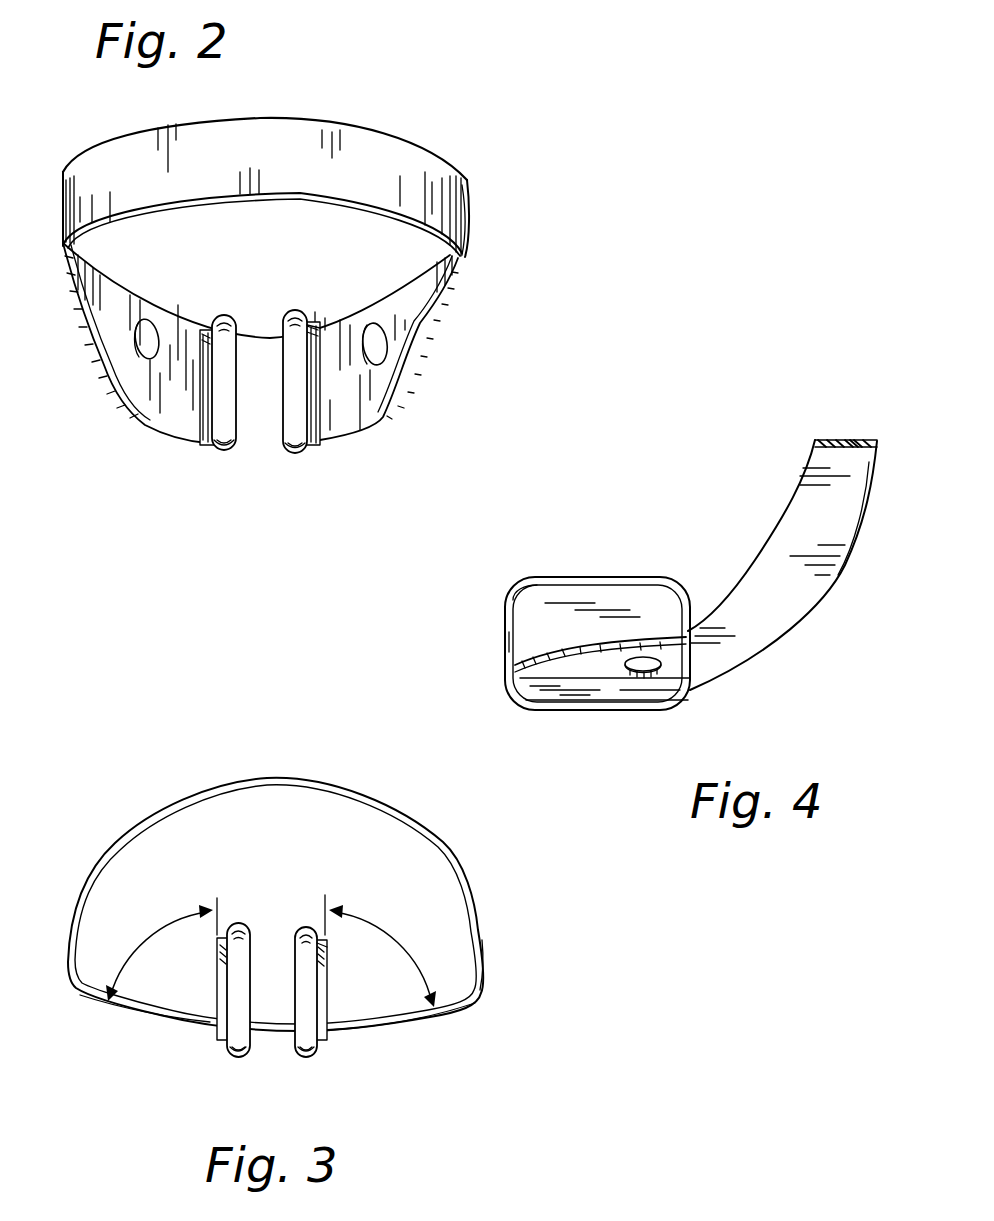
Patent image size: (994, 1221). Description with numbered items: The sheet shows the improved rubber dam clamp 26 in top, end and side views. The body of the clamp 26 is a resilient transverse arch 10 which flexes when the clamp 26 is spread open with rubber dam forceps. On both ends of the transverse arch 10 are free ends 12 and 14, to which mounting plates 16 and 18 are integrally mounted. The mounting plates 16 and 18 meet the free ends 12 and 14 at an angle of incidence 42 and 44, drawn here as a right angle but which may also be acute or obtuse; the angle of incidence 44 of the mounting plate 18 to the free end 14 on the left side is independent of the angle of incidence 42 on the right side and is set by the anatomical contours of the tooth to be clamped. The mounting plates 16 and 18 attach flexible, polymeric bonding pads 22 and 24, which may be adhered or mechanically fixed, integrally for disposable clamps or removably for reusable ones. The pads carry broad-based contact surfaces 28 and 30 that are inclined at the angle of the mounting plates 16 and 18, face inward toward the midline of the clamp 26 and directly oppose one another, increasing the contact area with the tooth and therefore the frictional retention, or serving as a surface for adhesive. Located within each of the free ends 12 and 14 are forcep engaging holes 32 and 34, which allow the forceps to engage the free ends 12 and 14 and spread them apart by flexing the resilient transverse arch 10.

In FIG. 2, the resilient transverse arch 10 is at (315, 130).
In FIG. 4, the resilient transverse arch 10 is at (808, 503).
In FIG. 3, the resilient transverse arch 10 is at (335, 787).
In FIG. 2, the free end 12 is at (393, 378).
In FIG. 4, the free end 12 is at (568, 660).
In FIG. 3, the free end 12 is at (415, 1020).
In FIG. 2, the free end 14 is at (175, 412).
In FIG. 3, the free end 14 is at (140, 1010).
In FIG. 2, the mounting plate 16 is at (303, 407).
In FIG. 4, the mounting plate 16 is at (530, 622).
In FIG. 3, the mounting plate 16 is at (327, 983).
In FIG. 2, the mounting plate 18 is at (208, 420).
In FIG. 3, the mounting plate 18 is at (218, 978).
In FIG. 2, the flexible polymeric bonding pad 22 is at (302, 442).
In FIG. 4, the flexible polymeric bonding pad 22 is at (505, 600).
In FIG. 3, the flexible polymeric bonding pad 22 is at (308, 1055).
In FIG. 2, the flexible polymeric bonding pad 24 is at (222, 452).
In FIG. 3, the flexible polymeric bonding pad 24 is at (233, 1058).
In FIG. 2, the rubber dam clamp 26 is at (484, 176).
In FIG. 4, the rubber dam clamp 26 is at (828, 605).
In FIG. 3, the rubber dam clamp 26 is at (490, 955).
In FIG. 2, the contact surface 28 is at (278, 433).
In FIG. 3, the contact surface 28 is at (296, 1040).
In FIG. 2, the contact surface 30 is at (240, 367).
In FIG. 3, the contact surface 30 is at (258, 1037).
In FIG. 2, the forcep engaging hole 32 is at (380, 342).
In FIG. 4, the forcep engaging hole 32 is at (641, 668).
In FIG. 2, the forcep engaging hole 34 is at (140, 343).
In FIG. 3, the angle of incidence 42 is at (393, 950).
In FIG. 3, the angle of incidence 44 is at (155, 947).